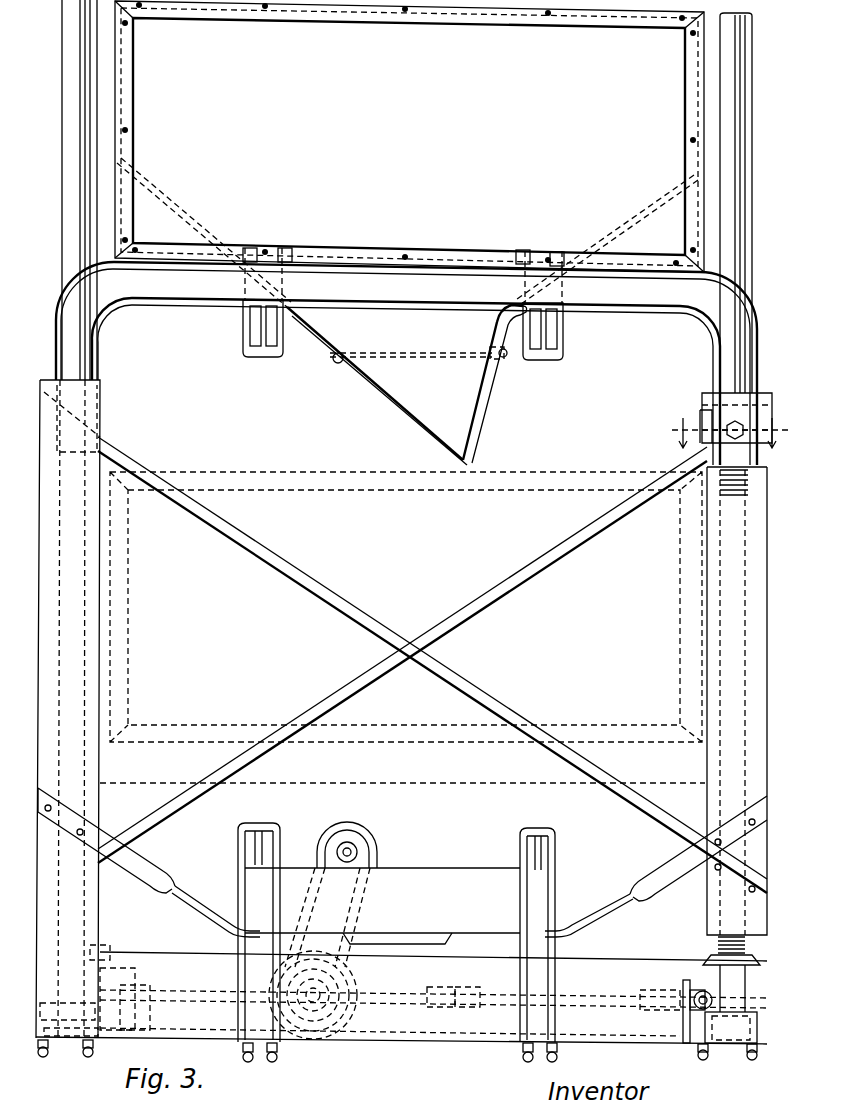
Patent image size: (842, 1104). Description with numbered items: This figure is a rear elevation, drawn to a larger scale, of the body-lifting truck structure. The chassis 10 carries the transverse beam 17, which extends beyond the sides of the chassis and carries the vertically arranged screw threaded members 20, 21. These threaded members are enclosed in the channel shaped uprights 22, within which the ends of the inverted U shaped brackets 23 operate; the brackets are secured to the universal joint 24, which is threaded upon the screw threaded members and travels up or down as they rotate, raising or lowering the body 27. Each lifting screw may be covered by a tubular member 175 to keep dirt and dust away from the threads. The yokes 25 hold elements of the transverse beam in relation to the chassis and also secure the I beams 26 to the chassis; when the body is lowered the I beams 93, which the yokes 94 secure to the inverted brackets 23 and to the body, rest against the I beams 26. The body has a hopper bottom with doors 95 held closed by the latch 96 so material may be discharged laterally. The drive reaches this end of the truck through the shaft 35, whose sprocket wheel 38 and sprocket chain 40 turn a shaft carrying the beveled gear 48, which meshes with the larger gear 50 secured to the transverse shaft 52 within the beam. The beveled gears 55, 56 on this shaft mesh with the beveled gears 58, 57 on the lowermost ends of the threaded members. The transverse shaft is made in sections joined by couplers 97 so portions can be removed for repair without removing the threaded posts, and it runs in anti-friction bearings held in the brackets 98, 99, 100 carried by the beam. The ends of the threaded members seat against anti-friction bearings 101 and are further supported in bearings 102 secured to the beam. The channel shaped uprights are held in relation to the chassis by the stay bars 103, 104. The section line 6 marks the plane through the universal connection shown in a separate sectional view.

The section line 6- 6 is at (723, 433).
The chassis 10 is at (384, 916).
The transverse beam 17 is at (595, 974).
The screw threaded member 20 is at (88, 646).
The screw threaded member 21 is at (740, 496).
The channel shaped upright 22 is at (401, 709).
The inverted U shaped bracket 23 is at (188, 302).
The universal joint 24 is at (748, 402).
The yoke 25 is at (240, 890).
The I beam 26 is at (273, 846).
The body 27 is at (540, 474).
The shaft 35 is at (370, 840).
The sprocket wheel 38 is at (365, 856).
The sprocket chain 40 is at (320, 1022).
The beveled gear 48 is at (300, 1036).
The larger gear 50 is at (310, 1040).
The transverse shaft 52 is at (648, 991).
The beveled gear 55 is at (699, 1011).
The beveled gear 56 is at (116, 986).
The beveled gear 57 is at (45, 1021).
The beveled gear 58 is at (758, 1050).
The I beam 93 is at (255, 340).
The yoke 94 is at (272, 354).
The door 95 is at (430, 350).
The latch 96 is at (508, 358).
The coupler 97 is at (462, 1009).
The bracket 98 is at (128, 1031).
The bracket 99 is at (352, 1036).
The bracket 100 is at (678, 1030).
The anti-friction bearing 101 is at (730, 1042).
The bearing 102 is at (96, 950).
The stay bar 103 is at (350, 690).
The stay bar 104 is at (148, 867).
The tubular member 175 is at (66, 66).